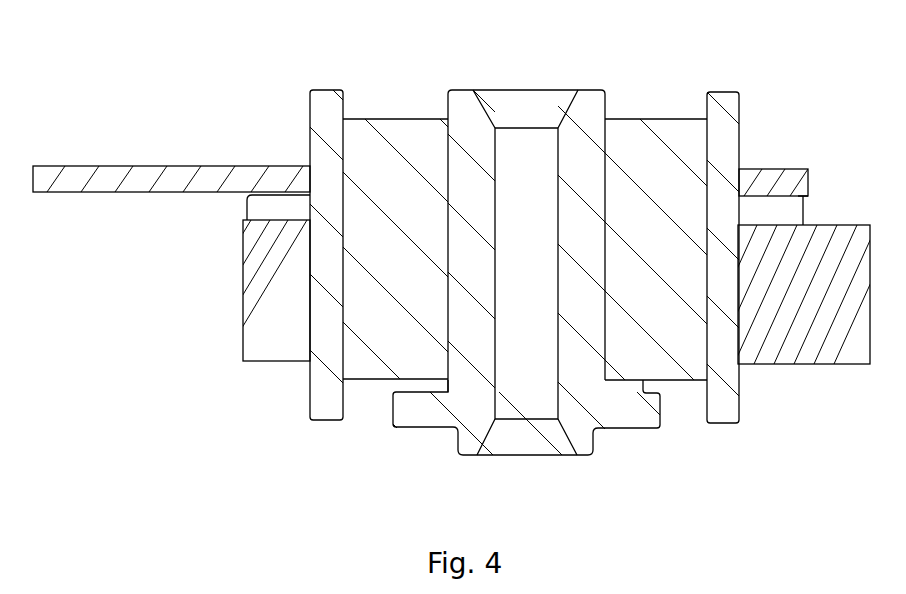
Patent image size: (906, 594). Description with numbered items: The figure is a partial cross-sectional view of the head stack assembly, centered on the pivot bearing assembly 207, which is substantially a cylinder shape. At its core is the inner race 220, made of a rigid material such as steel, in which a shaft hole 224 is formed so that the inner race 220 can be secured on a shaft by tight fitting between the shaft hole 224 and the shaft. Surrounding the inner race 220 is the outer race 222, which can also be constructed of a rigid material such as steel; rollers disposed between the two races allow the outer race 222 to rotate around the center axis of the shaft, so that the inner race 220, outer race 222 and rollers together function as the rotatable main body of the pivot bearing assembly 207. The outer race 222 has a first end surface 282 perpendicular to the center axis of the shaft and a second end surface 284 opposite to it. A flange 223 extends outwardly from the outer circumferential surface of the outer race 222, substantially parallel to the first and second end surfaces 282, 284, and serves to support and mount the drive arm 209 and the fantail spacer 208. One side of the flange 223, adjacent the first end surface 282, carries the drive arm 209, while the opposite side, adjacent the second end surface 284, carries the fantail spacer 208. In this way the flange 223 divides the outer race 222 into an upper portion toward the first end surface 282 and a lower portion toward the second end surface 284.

The pivot bearing assembly 207 is at (490, 514).
The fantail spacer 208 is at (777, 358).
The drive arm 209 is at (234, 166).
The inner race 220 is at (465, 105).
The outer race 222 is at (733, 118).
The flange 223 is at (793, 212).
The shaft hole 224 is at (528, 157).
The first end surface 282 is at (324, 90).
The second end surface 284 is at (333, 421).